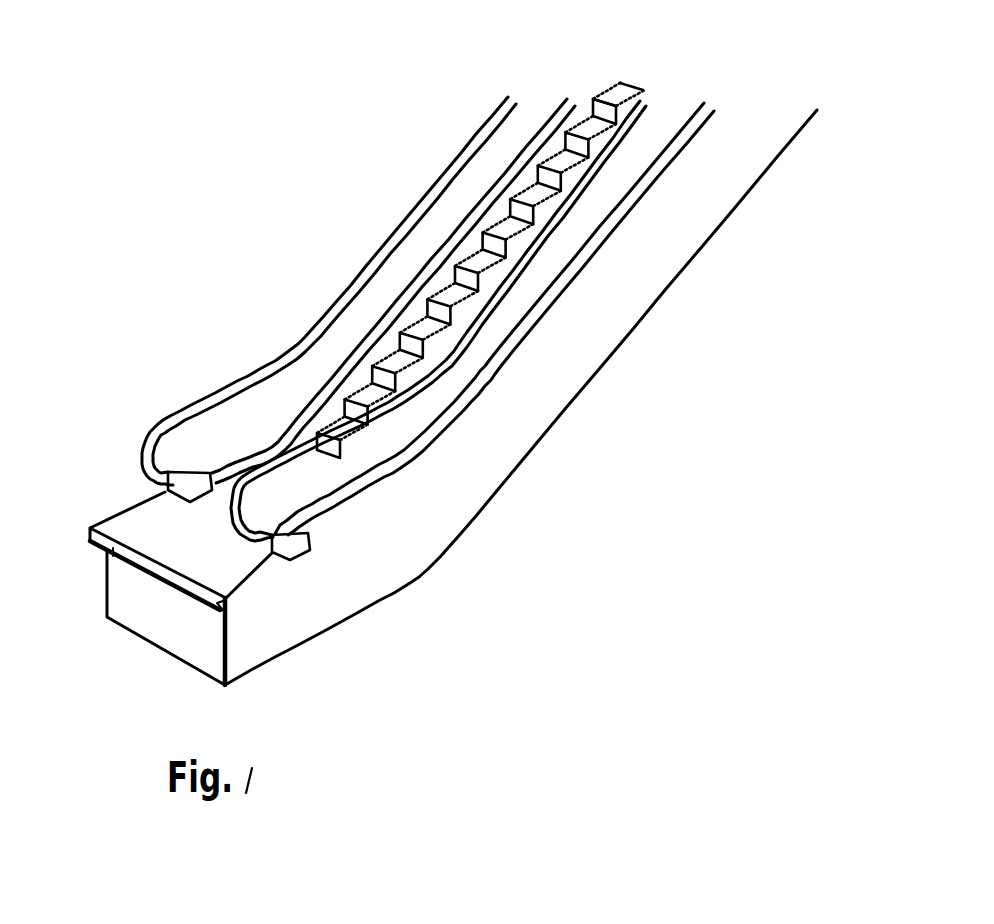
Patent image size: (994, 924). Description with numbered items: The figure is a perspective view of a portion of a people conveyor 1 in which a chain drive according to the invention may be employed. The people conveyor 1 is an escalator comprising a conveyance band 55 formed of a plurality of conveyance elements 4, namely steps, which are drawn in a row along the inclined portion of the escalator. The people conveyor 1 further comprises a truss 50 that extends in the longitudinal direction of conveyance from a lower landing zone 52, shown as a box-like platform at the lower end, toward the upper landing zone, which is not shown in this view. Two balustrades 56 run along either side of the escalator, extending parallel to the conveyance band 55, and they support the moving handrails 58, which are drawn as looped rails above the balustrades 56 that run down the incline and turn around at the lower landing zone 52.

The people conveyor 1 is at (218, 222).
The conveyance elements 4 is at (336, 435).
The truss 50 is at (468, 508).
The lower landing zone 52 is at (95, 437).
The conveyance band 55 is at (605, 78).
The balustrades 56 is at (369, 292).
The moving handrails 58 is at (438, 182).